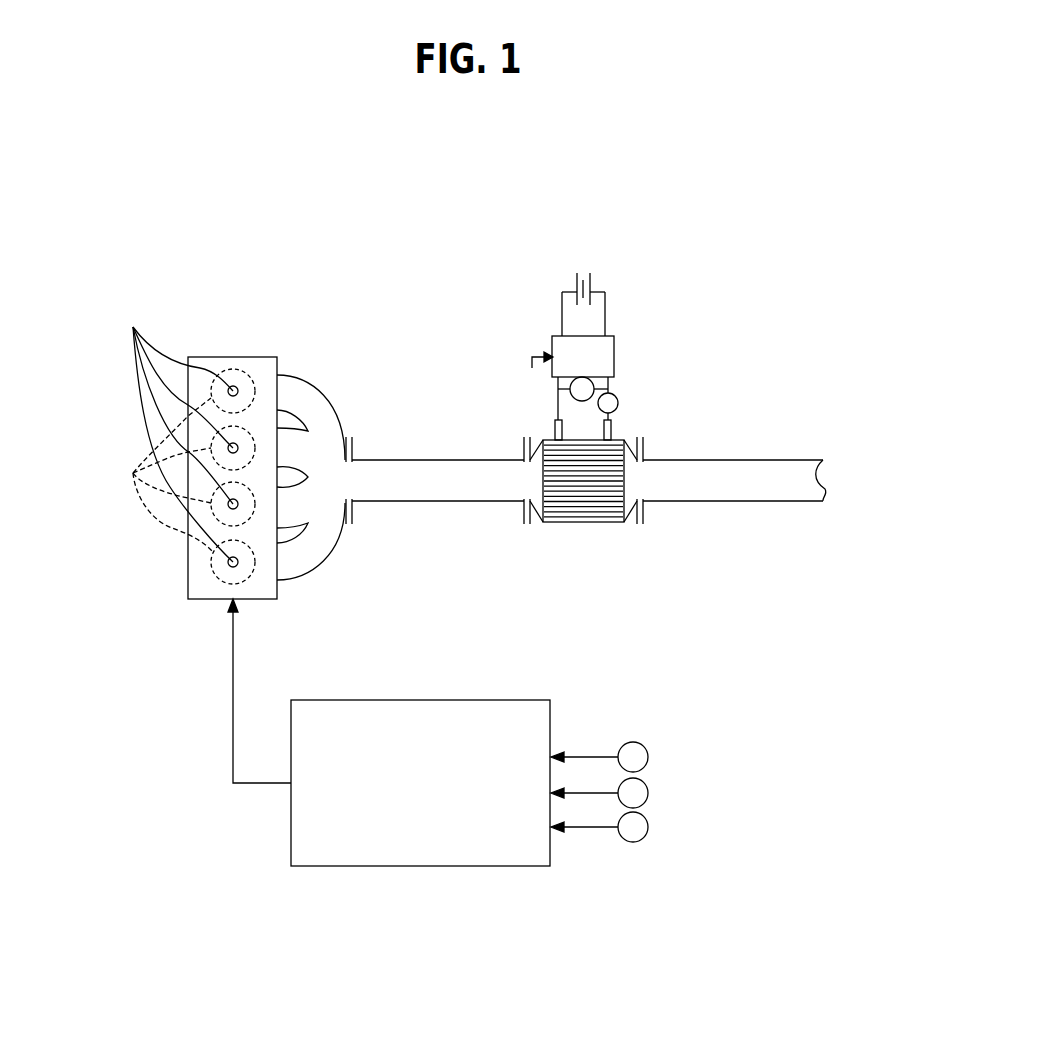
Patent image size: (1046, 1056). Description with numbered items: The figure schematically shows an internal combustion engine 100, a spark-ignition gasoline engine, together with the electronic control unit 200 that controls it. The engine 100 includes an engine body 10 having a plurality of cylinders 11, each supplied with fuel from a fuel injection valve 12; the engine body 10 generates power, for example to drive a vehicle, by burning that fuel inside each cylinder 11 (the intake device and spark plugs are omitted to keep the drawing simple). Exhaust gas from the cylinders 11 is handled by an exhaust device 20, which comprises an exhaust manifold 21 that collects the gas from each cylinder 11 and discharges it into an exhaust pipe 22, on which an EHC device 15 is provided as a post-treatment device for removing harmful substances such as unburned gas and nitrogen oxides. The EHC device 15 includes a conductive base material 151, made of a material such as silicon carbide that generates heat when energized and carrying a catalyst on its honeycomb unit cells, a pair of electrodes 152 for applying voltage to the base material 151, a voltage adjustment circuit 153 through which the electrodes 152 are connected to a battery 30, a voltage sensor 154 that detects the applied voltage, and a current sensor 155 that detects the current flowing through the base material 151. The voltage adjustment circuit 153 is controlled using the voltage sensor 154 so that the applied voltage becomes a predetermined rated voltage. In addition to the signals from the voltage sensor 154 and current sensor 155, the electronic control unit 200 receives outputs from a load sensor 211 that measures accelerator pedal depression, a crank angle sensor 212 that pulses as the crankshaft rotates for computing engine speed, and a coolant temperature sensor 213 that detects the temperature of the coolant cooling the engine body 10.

The internal combustion engine 100 is at (431, 346).
The engine body 10 is at (252, 357).
The cylinder 11 is at (155, 475).
The fuel injection valve 12 is at (175, 428).
The exhaust device 20 is at (407, 430).
The exhaust manifold 21 is at (328, 547).
The exhaust pipe 22 is at (428, 502).
The EHC device 15 is at (579, 455).
The conductive base material 151 is at (578, 523).
The electrodes 152 is at (602, 430).
The voltage adjustment circuit 153 is at (615, 347).
The voltage sensor 154 is at (556, 383).
The current sensor 155 is at (617, 428).
The battery 30 is at (597, 287).
The electronic control unit 200 is at (413, 868).
The load sensor 211 is at (648, 757).
The crank angle sensor 212 is at (648, 793).
The coolant temperature sensor 213 is at (648, 827).